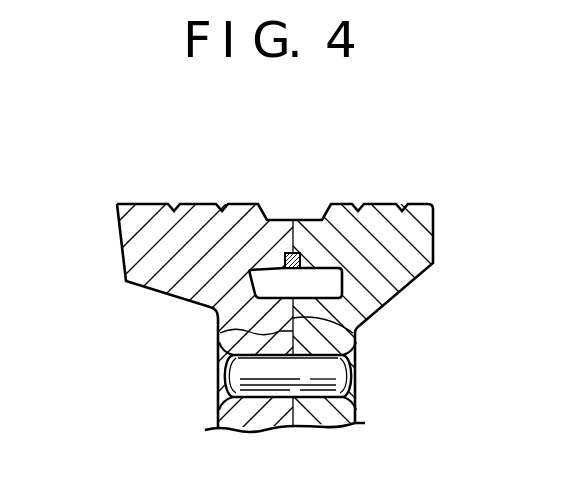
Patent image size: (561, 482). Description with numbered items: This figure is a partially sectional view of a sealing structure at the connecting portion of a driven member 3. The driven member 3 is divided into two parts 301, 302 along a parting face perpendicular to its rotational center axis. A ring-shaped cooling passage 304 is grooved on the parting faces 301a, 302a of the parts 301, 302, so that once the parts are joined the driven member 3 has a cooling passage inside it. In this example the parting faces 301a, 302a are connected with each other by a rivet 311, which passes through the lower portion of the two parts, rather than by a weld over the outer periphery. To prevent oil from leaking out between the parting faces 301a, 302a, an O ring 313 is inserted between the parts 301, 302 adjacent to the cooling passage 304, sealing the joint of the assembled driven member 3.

The driven member 3 is at (158, 190).
The part of the driven member 301 is at (140, 273).
The part of the driven member 302 is at (417, 239).
The parting face 301a is at (362, 332).
The parting face 302a is at (218, 336).
The ring-shaped cooling passage 304 is at (275, 290).
The O ring 313 is at (303, 252).
The rivet 311 is at (333, 375).